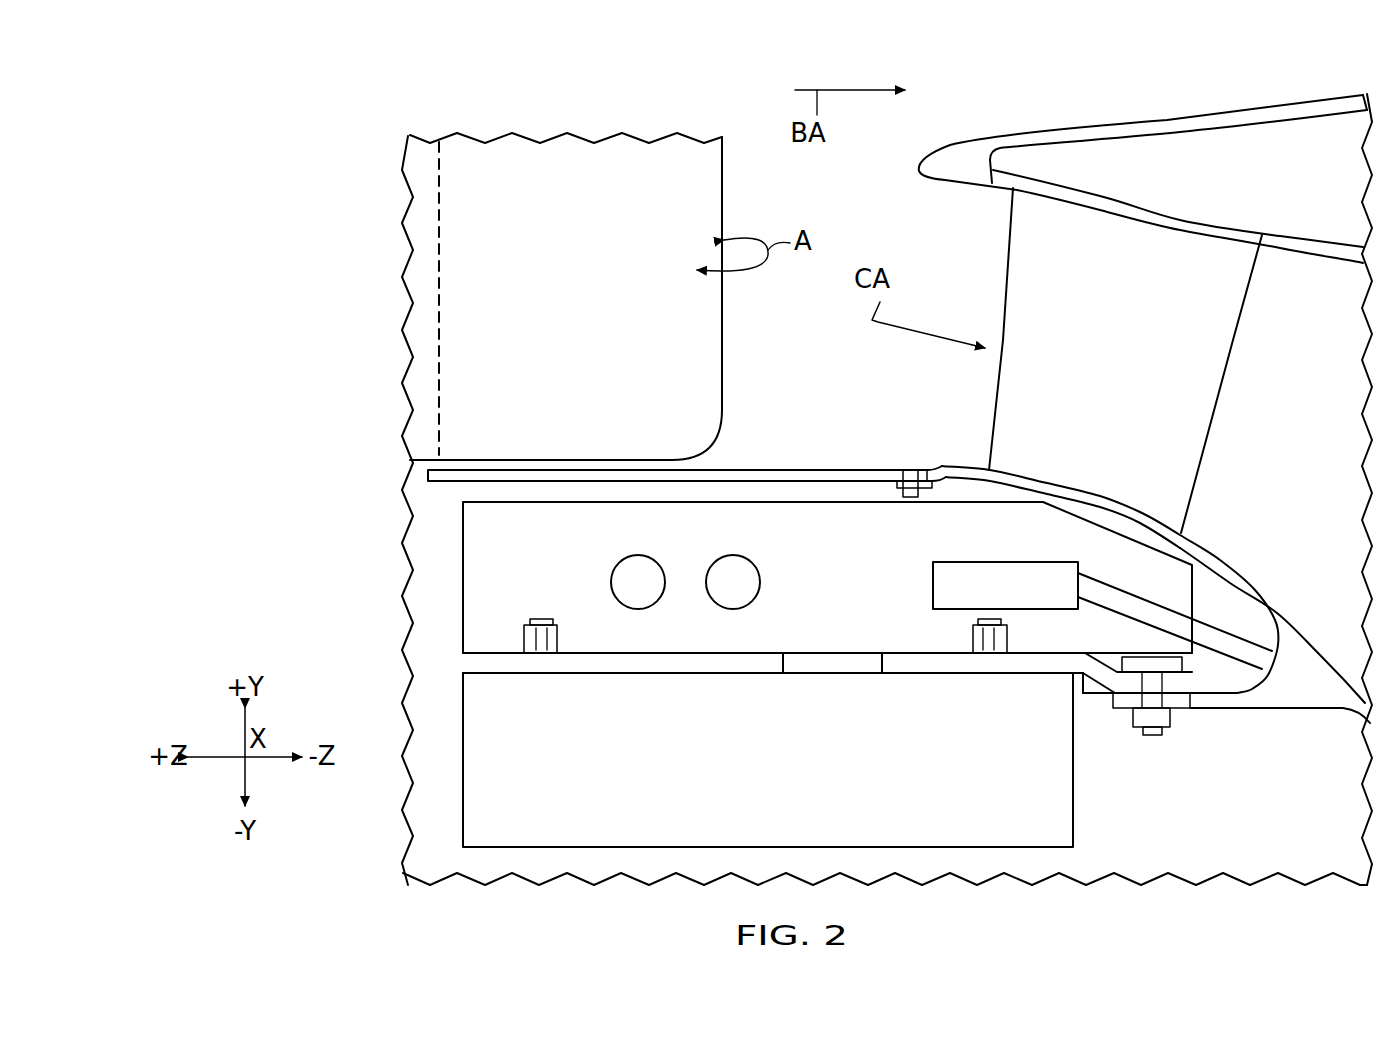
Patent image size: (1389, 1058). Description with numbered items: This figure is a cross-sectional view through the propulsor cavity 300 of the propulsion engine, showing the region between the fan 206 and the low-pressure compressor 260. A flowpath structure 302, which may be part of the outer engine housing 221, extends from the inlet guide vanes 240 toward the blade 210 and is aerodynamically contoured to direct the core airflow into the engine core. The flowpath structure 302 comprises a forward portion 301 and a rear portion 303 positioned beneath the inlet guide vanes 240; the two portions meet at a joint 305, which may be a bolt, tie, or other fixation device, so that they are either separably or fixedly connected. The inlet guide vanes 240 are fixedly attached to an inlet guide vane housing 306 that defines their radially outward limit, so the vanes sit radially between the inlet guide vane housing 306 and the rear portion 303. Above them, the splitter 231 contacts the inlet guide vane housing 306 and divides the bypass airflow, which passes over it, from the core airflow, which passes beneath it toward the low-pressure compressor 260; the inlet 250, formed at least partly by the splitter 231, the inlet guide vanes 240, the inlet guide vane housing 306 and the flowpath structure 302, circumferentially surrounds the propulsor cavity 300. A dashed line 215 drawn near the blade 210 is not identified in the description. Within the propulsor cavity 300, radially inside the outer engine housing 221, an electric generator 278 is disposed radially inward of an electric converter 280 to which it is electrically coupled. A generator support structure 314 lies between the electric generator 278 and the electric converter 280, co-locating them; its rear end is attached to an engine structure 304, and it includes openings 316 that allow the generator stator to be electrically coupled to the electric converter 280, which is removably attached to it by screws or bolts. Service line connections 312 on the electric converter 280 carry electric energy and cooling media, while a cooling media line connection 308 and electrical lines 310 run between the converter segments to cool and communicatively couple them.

The fan 206 is at (692, 128).
The blade 210 is at (428, 226).
The hinge line 215 is at (441, 180).
The outer engine housing 221 is at (758, 465).
The splitter 231 is at (1120, 128).
The inlet guide vanes 240 is at (1014, 305).
The inlet 250 is at (952, 246).
The low-pressure compressor 260 is at (1322, 632).
The electric generator 278 is at (470, 737).
The electric converter 280 is at (1122, 545).
The propulsor cavity 300 is at (430, 678).
The forward portion 301 is at (810, 470).
The flowpath structure 302 is at (880, 448).
The rear portion 303 is at (1062, 494).
The engine structure 304 is at (1205, 697).
The joint 305 is at (917, 468).
The inlet guide vane housing 306 is at (1086, 188).
The cooling media line connection 308 is at (752, 584).
The electrical lines 310 is at (622, 584).
The service line connections 312 is at (942, 585).
The generator support structure 314 is at (602, 665).
The openings 316 is at (835, 660).